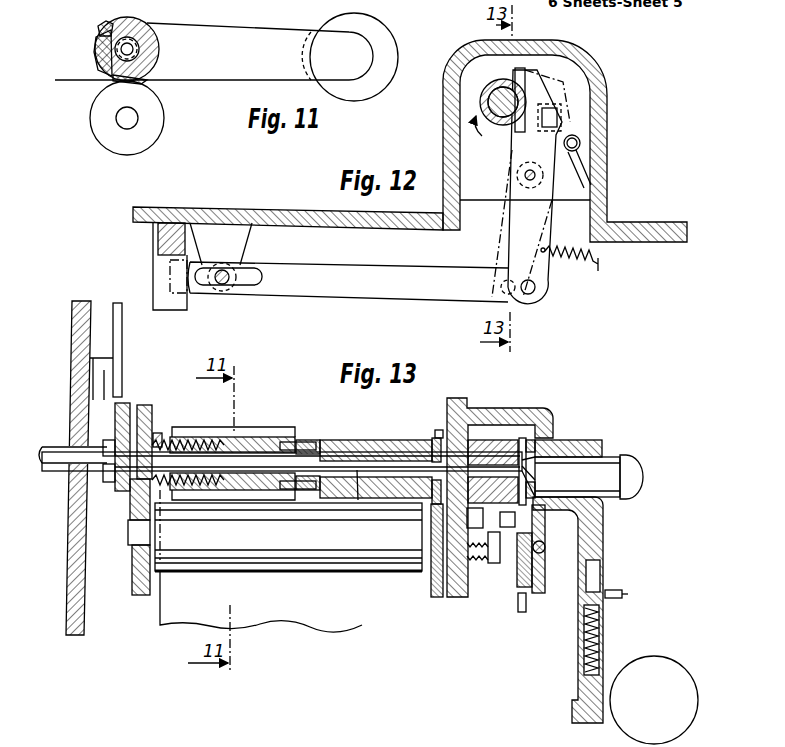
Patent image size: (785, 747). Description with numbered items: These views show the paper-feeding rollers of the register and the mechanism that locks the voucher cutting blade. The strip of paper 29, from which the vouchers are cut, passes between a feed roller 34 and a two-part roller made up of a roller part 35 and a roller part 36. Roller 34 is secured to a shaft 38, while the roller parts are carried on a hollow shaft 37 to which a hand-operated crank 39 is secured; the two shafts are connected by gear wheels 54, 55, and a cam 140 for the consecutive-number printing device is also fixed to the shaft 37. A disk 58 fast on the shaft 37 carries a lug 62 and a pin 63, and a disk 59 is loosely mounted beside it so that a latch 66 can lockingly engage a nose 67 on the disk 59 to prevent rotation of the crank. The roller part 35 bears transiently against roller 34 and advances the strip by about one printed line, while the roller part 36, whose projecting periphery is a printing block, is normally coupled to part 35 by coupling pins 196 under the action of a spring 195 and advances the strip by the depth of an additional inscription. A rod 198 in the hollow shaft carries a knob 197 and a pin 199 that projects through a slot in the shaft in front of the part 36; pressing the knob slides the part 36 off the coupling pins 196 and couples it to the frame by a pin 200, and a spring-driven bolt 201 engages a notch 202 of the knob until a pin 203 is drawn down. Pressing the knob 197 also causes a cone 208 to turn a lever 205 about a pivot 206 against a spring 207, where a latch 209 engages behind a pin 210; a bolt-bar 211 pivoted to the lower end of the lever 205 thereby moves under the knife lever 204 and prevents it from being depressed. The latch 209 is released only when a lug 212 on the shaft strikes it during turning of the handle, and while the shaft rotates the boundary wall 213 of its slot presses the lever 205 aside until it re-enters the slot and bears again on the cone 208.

In FIG. 11, the strip of paper 29 is at (192, 88).
In FIG. 13, the strip of paper 29 is at (261, 602).
In FIG. 11, the feed roller 34 is at (164, 133).
In FIG. 13, the feed roller 34 is at (288, 537).
In FIG. 11, the roller part 35 is at (147, 84).
In FIG. 13, the roller part 35 is at (356, 441).
In FIG. 11, the roller part 36 is at (100, 24).
In FIG. 13, the roller part 36 is at (250, 432).
In FIG. 11, the shaft 37 is at (143, 26).
In FIG. 12, the shaft 37 is at (481, 104).
In FIG. 13, the shaft 37 is at (406, 441).
In FIG. 11, the shaft 38 is at (120, 122).
In FIG. 13, the shaft 38 is at (138, 550).
In FIG. 11, the hand-operated crank 39 is at (272, 57).
In FIG. 13, the hand-operated crank 39 is at (657, 664).
In FIG. 13, the gear wheel 54 is at (457, 432).
In FIG. 13, the gear wheel 55 is at (438, 580).
In FIG. 13, the disk 58 is at (126, 406).
In FIG. 13, the disk 59 is at (134, 512).
In FIG. 13, the lug 62 is at (105, 444).
In FIG. 13, the pin 63 is at (105, 470).
In FIG. 13, the latch 66 is at (120, 330).
In FIG. 13, the nose 67 is at (98, 468).
In FIG. 13, the cam 140 is at (438, 430).
In FIG. 13, the spring 195 is at (207, 440).
In FIG. 11, the coupling pins 196 is at (97, 44).
In FIG. 13, the coupling pins 196 is at (308, 442).
In FIG. 13, the knob 197 is at (637, 477).
In FIG. 13, the rod 198 is at (358, 505).
In FIG. 13, the pin 199 is at (300, 444).
In FIG. 13, the pin 200 is at (158, 434).
In FIG. 13, the spring-driven bolt 201 is at (606, 546).
In FIG. 13, the notch 202 is at (626, 500).
In FIG. 13, the pin 203 is at (629, 594).
In FIG. 12, the knife lever 204 is at (163, 239).
In FIG. 12, the lever 205 is at (553, 101).
In FIG. 13, the lever 205 is at (518, 606).
In FIG. 12, the pivot 206 is at (525, 176).
In FIG. 13, the pivot 206 is at (546, 551).
In FIG. 12, the spring 207 is at (570, 270).
In FIG. 13, the cone 208 is at (556, 443).
In FIG. 12, the latch 209 is at (580, 134).
In FIG. 13, the latch 209 is at (494, 563).
In FIG. 12, the pin 210 is at (560, 118).
In FIG. 13, the pin 210 is at (516, 523).
In FIG. 12, the bolt-bar 211 is at (362, 277).
In FIG. 12, the lug 212 is at (513, 134).
In FIG. 13, the lug 212 is at (477, 515).
In FIG. 12, the boundary wall 213 is at (518, 72).